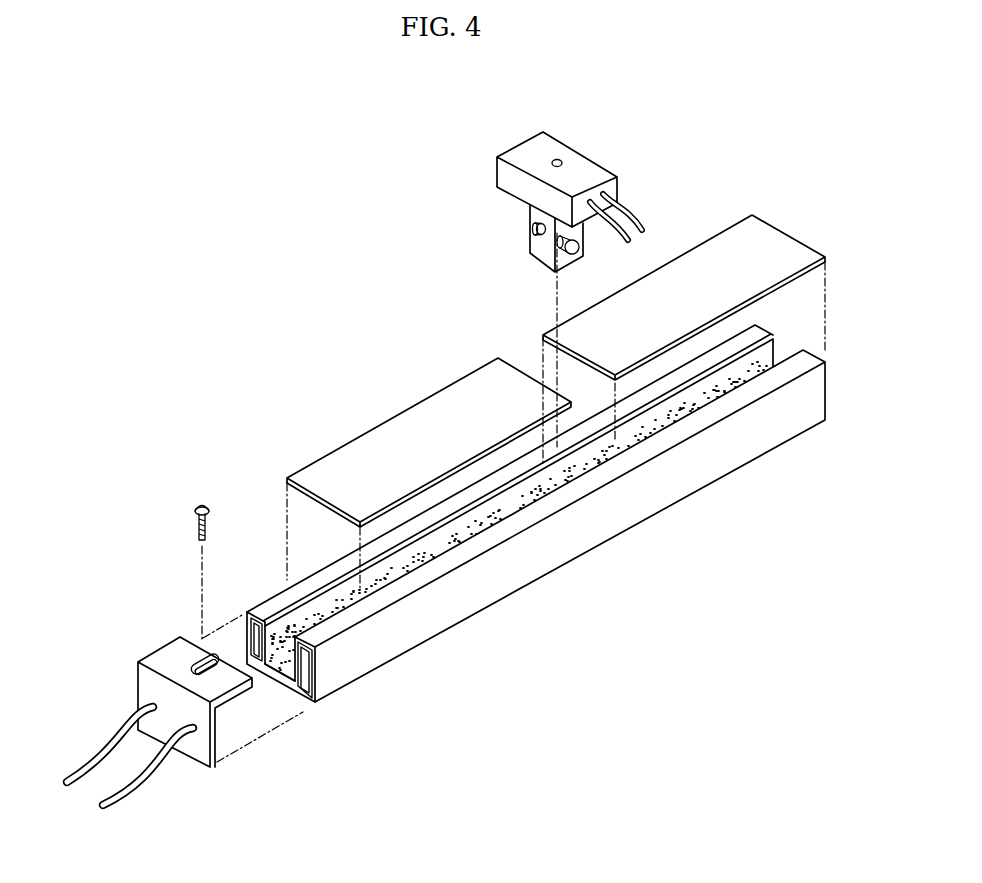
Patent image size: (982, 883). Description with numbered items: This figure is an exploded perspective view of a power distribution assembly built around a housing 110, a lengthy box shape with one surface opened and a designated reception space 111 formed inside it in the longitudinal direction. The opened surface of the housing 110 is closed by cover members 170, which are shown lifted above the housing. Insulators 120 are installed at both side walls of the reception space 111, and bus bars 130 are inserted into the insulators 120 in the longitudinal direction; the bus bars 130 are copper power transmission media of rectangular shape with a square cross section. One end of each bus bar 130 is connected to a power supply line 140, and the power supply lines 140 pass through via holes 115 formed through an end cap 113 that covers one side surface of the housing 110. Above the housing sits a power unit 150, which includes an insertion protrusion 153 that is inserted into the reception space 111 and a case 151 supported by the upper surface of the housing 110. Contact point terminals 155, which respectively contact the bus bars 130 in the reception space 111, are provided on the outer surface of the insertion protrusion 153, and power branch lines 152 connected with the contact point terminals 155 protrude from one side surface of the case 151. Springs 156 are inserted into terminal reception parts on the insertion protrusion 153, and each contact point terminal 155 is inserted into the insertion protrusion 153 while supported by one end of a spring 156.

The housing 110 is at (433, 628).
The reception space 111 is at (288, 673).
The end cap 113 is at (165, 655).
The via holes 115 is at (140, 708).
The insulators 120 is at (303, 690).
The bus bars 130 is at (313, 678).
The power supply lines 140 is at (148, 790).
The power unit 150 is at (545, 189).
The case 151 is at (572, 156).
The power branch lines 152 is at (632, 213).
The insertion protrusion 153 is at (530, 258).
The contact point terminals 155 is at (583, 244).
The springs 156 is at (561, 250).
The cover members 170 is at (738, 228).